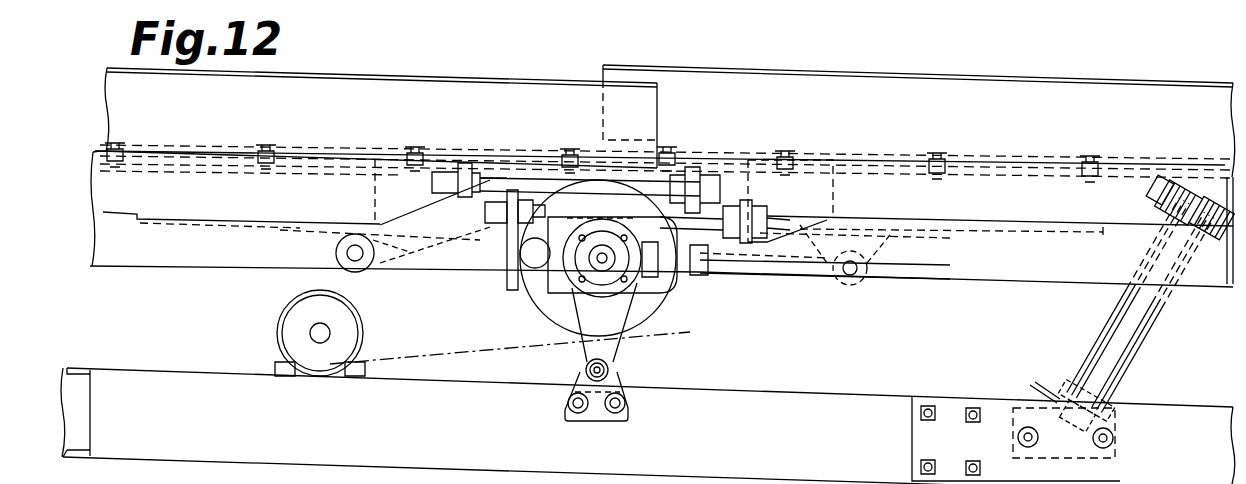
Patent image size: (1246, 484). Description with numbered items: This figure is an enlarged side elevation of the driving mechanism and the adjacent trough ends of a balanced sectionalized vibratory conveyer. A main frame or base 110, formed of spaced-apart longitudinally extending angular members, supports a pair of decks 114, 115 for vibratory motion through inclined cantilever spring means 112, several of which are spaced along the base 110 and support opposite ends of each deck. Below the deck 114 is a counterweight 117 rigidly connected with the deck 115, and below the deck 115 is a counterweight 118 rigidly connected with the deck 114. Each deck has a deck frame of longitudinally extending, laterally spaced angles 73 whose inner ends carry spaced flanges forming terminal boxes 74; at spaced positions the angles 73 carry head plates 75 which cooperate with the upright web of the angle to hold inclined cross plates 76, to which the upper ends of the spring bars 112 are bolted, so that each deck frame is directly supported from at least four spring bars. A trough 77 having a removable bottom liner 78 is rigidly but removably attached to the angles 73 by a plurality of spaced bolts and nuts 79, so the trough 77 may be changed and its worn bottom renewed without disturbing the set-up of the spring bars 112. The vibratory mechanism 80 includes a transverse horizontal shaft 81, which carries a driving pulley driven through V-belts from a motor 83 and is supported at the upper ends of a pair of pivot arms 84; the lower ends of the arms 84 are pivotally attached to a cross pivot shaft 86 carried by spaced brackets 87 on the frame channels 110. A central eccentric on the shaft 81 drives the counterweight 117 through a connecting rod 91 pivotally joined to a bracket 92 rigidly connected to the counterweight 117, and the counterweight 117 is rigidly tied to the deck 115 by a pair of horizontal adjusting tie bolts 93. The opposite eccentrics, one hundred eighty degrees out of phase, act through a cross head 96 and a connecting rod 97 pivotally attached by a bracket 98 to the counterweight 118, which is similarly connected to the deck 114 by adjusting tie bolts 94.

The angles 73 is at (1127, 213).
The terminal boxes 74 is at (790, 201).
The head plates 75 is at (1160, 184).
The inclined cross plates 76 is at (1200, 182).
The trough 77 is at (919, 121).
The removable bottom liner 78 is at (890, 150).
The bolts and nuts 79 is at (937, 153).
The vibratory mechanism 80 is at (684, 310).
The shaft 81 is at (600, 258).
The motor 83 is at (343, 330).
The pivot arms 84 is at (610, 347).
The cross pivot shaft 86 is at (586, 370).
The brackets 87 is at (617, 392).
The connecting rod 91 is at (763, 279).
The bracket 92 is at (877, 250).
The adjusting tie bolts 93 is at (540, 185).
The adjusting tie bolts 94 is at (713, 222).
The cross head 96 is at (534, 266).
The connecting rod 97 is at (514, 265).
The bracket 98 is at (333, 242).
The main frame or base 110 is at (781, 405).
The inclined cantilever spring means 112 is at (1127, 357).
The deck 114 is at (1024, 200).
The deck 115 is at (395, 126).
The counterweight 117 is at (947, 263).
The counterweight 118 is at (197, 257).